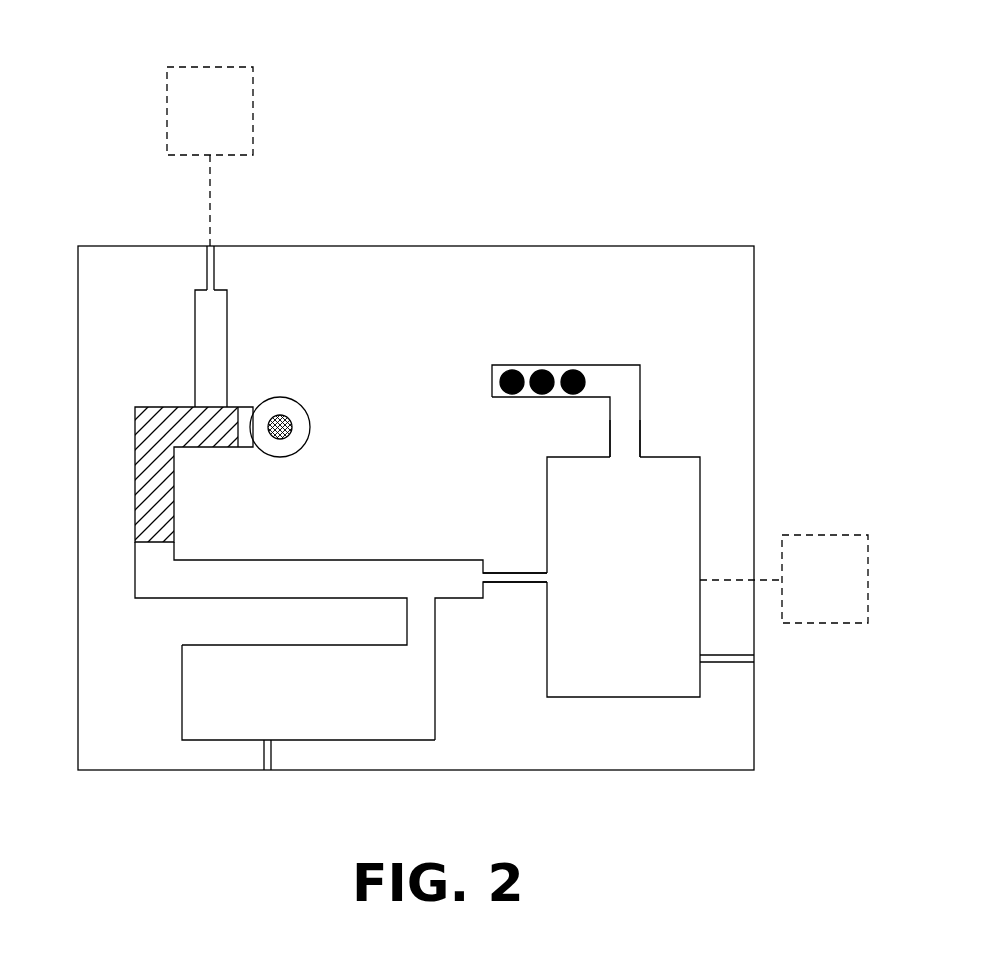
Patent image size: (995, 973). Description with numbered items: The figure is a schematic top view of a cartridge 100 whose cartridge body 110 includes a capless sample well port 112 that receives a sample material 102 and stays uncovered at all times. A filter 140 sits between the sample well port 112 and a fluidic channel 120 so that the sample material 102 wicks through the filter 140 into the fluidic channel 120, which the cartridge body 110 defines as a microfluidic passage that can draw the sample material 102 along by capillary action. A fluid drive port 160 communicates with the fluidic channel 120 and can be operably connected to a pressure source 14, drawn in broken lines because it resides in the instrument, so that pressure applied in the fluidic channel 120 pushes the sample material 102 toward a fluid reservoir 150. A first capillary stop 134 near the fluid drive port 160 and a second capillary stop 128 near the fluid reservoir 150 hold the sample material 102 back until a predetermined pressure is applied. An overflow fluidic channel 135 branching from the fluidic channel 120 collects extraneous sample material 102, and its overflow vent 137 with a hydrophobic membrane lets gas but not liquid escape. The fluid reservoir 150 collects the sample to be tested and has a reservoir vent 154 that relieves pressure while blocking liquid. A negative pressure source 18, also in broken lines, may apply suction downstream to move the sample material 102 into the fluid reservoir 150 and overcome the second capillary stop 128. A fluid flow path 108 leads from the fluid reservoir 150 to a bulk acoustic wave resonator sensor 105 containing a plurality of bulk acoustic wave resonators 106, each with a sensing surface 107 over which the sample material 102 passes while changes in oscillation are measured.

The cartridge 100 is at (515, 103).
The cartridge body 110 is at (628, 247).
The pressure source 14 is at (218, 85).
The fluid drive port 160 is at (209, 246).
The first capillary stop 134 is at (215, 270).
The sample material 102 is at (148, 443).
The filter 140 is at (292, 420).
The sample well port 112 is at (313, 428).
The fluidic channel 120 is at (133, 542).
The overflow fluidic channel 135 is at (338, 698).
The overflow vent 137 is at (272, 757).
The second capillary stop 128 is at (523, 572).
The bulk acoustic wave resonator sensor 105 is at (512, 365).
The bulk acoustic wave resonator 106 is at (515, 399).
The sensing surface 107 is at (558, 374).
The fluid flow path 108 is at (626, 428).
The fluid reservoir 150 is at (698, 458).
The reservoir vent 154 is at (725, 663).
The negative pressure source 18 is at (797, 534).